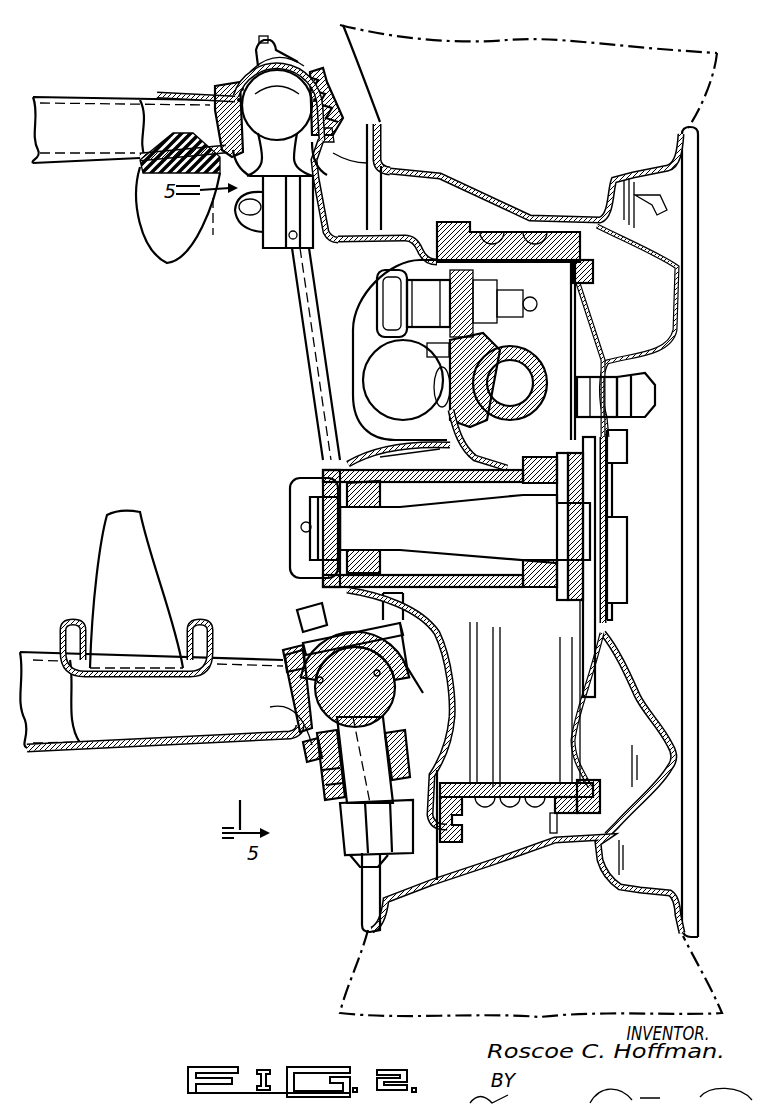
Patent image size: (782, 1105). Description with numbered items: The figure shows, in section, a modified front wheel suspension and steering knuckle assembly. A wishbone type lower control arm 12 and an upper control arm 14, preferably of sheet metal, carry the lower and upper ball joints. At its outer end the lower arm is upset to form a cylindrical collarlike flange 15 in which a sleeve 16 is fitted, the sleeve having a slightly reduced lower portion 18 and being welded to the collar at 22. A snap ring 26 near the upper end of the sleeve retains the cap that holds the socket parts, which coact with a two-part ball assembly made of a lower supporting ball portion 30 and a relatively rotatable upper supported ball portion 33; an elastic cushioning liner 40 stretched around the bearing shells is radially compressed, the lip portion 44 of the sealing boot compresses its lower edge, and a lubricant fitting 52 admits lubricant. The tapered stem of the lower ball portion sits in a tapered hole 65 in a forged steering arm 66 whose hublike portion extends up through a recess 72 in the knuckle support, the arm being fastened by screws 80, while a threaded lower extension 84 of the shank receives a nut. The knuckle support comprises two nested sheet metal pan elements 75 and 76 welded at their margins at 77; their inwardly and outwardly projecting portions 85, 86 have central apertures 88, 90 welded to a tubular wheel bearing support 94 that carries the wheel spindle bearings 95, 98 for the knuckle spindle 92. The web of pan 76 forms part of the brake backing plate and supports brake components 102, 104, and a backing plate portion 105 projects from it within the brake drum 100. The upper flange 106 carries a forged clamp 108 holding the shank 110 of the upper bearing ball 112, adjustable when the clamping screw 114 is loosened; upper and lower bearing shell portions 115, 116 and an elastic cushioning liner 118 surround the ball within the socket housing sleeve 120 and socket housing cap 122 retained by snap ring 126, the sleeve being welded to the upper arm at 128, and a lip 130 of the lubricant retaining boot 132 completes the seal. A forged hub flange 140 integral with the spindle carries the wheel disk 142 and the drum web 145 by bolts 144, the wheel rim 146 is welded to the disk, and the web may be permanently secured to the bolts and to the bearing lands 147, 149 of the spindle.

The control arm 12 is at (38, 645).
The upper control arm 14 is at (65, 92).
The collarlike flange 15 is at (300, 712).
The cylindrical sleeve 16 is at (272, 672).
The reduced portion 18 is at (290, 693).
The weld 22 is at (303, 747).
The snap ring 26 is at (300, 663).
The lower supporting ball portion 30 is at (382, 673).
The upper supported ball portion 33 is at (350, 638).
The elastic cushioning liner 40 is at (325, 645).
The lip portion 44 is at (425, 700).
The lubricant fitting 52 is at (306, 616).
The tapered hole 65 is at (345, 830).
The steering arm 66 is at (322, 762).
The recess 72 is at (331, 795).
The panlike element 75 is at (387, 443).
The panlike element 76 is at (475, 622).
The weld 77 is at (326, 780).
The screws 80 is at (398, 826).
The threaded lower extension 84 is at (362, 867).
The inwardly projecting portion 85 is at (348, 460).
The outwardly projecting portion 86 is at (505, 465).
The central aperture 88 is at (340, 472).
The central aperture 90 is at (530, 462).
The knuckle spindle 92 is at (443, 534).
The tubular wheel bearing support 94 is at (410, 461).
The wheel spindle bearing 95 is at (370, 497).
The bearing 98 is at (530, 484).
The brake drum 100 is at (508, 211).
The braking component 102 is at (500, 293).
The brake actuating component 104 is at (512, 355).
The backing plate portion 105 is at (447, 760).
The upper flange 106 is at (388, 234).
The forged clamp 108 is at (268, 225).
The shank portion 110 is at (278, 232).
The upper bearing ball 112 is at (292, 115).
The clamping screw 114 is at (243, 205).
The upper bearing shell portion 115 is at (280, 67).
The lower bearing shell portion 116 is at (323, 134).
The elastic cushioning liner 118 is at (287, 78).
The socket housing sleeve 120 is at (332, 75).
The socket housing cap 122 is at (255, 62).
The snap ring 126 is at (230, 87).
The weld 128 is at (337, 124).
The lip 130 is at (340, 100).
The lubricant retaining boot 132 is at (384, 147).
The hub flange 140 is at (590, 483).
The wheel disk 142 is at (673, 335).
The bolts 144 is at (657, 397).
The supporting web 145 is at (592, 318).
The wheel rim 146 is at (477, 185).
The bearing land 147 is at (352, 527).
The bearing land 149 is at (547, 533).